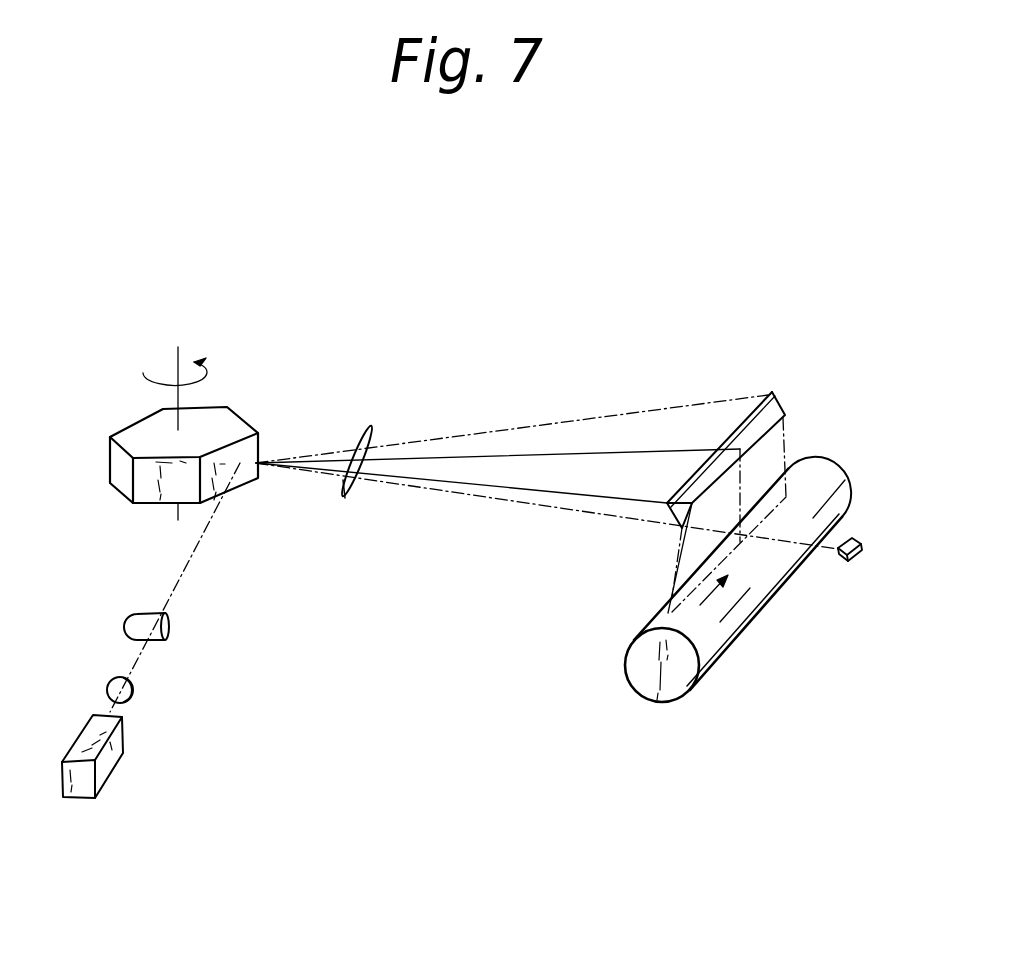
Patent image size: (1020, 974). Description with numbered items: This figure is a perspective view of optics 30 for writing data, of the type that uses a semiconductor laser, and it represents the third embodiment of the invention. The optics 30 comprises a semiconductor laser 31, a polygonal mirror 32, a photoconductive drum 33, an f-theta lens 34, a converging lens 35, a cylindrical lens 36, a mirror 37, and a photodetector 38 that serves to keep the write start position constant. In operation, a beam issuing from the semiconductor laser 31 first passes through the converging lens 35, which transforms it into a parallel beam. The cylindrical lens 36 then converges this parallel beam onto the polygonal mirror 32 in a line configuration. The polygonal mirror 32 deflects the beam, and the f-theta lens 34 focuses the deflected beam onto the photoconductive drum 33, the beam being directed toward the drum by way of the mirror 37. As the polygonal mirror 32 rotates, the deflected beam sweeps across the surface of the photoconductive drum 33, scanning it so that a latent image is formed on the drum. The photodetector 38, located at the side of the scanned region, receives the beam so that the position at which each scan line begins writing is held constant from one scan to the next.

The optics 30 is at (556, 394).
The semiconductor laser 31 is at (113, 760).
The polygonal mirror 32 is at (228, 418).
The photoconductive drum 33 is at (826, 470).
The f-theta lens 34 is at (349, 489).
The converging lens 35 is at (138, 684).
The cylindrical lens 36 is at (174, 620).
The mirror 37 is at (779, 396).
The photodetector 38 is at (862, 543).